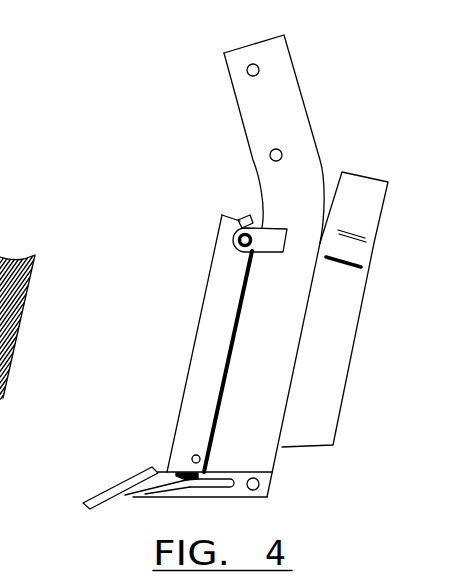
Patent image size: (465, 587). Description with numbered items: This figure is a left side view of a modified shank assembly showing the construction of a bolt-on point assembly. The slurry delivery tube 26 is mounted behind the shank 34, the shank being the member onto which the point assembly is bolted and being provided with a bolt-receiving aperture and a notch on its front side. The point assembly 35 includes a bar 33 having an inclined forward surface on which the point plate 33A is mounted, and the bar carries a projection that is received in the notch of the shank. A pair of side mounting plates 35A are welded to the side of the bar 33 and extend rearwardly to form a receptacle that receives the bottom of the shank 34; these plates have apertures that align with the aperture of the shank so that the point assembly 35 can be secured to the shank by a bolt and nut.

The slurry delivery tube 26 is at (370, 295).
The bar 33 is at (128, 500).
The point plate 33A is at (93, 496).
The shank 34 is at (317, 147).
The point assembly 35 is at (132, 472).
The side mounting plates 35A is at (268, 497).